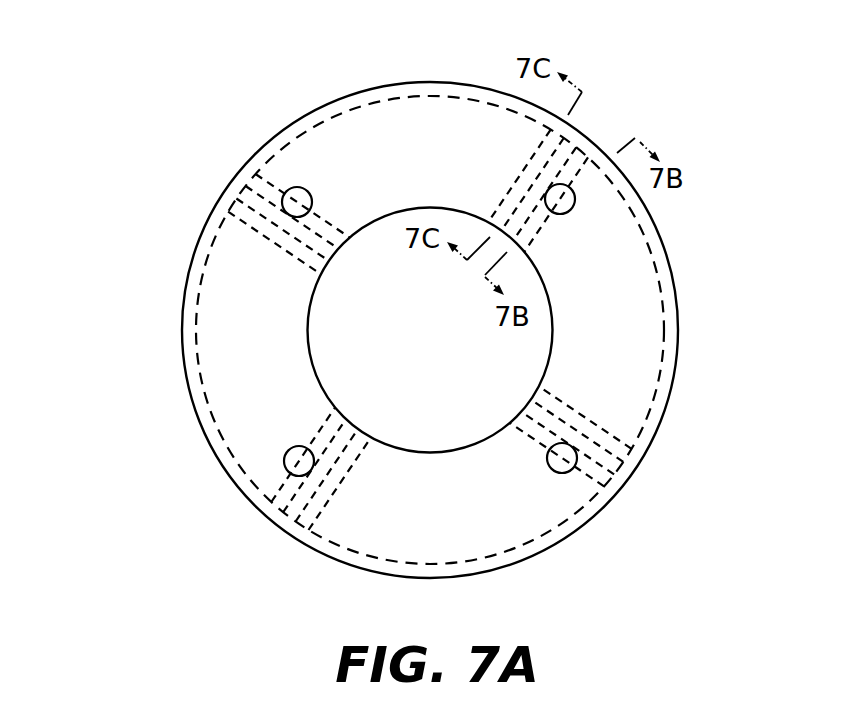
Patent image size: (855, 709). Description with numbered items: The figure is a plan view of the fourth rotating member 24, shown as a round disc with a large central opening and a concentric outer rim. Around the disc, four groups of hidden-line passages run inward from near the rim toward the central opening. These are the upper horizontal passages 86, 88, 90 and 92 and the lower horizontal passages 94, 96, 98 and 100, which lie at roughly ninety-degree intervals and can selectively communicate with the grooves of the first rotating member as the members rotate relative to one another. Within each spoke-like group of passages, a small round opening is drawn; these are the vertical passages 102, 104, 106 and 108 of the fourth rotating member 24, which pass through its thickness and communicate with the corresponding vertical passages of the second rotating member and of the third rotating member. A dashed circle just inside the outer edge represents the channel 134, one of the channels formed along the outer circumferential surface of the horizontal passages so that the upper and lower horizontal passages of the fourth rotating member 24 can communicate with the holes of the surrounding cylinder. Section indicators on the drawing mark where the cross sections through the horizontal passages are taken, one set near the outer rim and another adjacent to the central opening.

The fourth rotating member 24 is at (204, 70).
The upper horizontal passage 86 is at (534, 445).
The upper horizontal passage 88 is at (547, 232).
The upper horizontal passage 90 is at (323, 213).
The upper horizontal passage 92 is at (315, 437).
The lower horizontal passage 94 is at (597, 437).
The lower horizontal passage 96 is at (520, 189).
The lower horizontal passage 98 is at (258, 227).
The lower horizontal passage 100 is at (327, 497).
The vertical passage 102 is at (570, 463).
The vertical passage 104 is at (565, 212).
The vertical passage 106 is at (286, 192).
The vertical passage 108 is at (288, 472).
The channel 134 is at (667, 380).